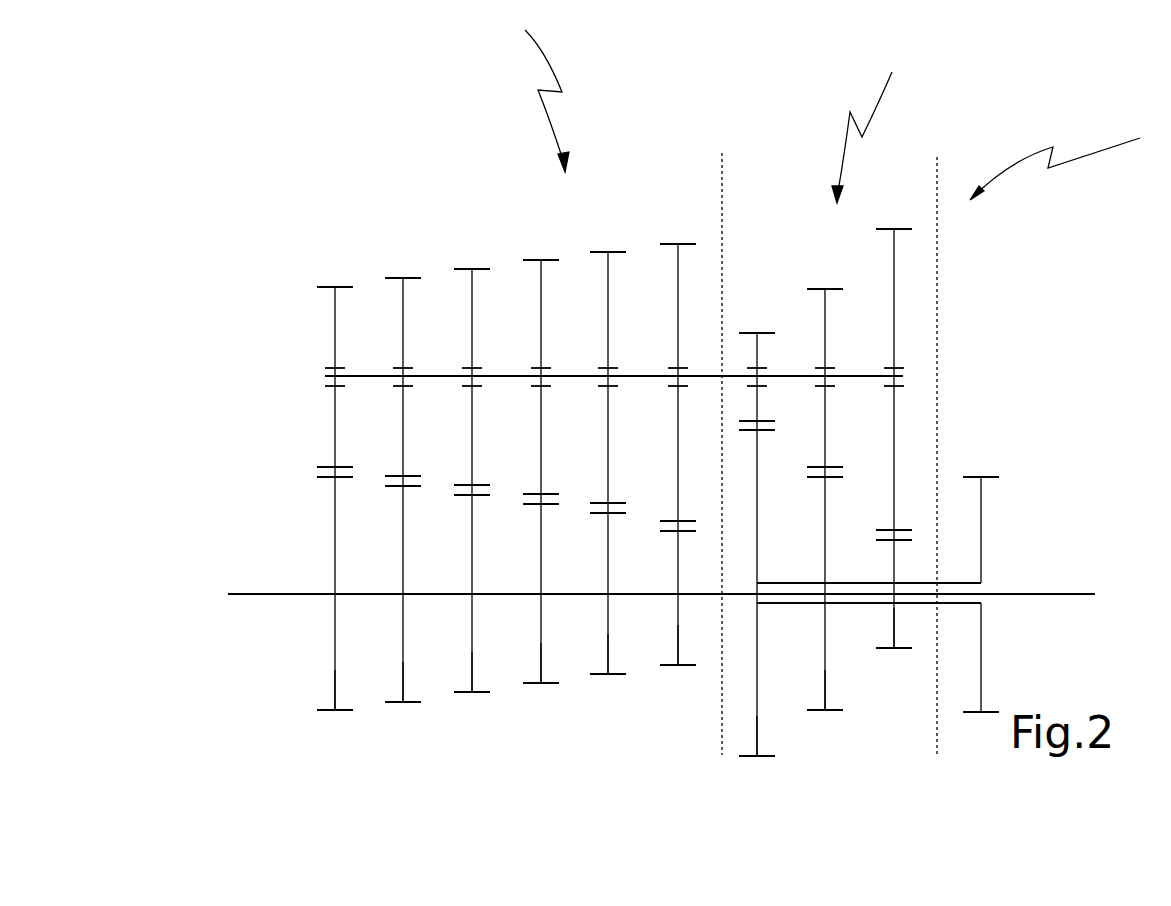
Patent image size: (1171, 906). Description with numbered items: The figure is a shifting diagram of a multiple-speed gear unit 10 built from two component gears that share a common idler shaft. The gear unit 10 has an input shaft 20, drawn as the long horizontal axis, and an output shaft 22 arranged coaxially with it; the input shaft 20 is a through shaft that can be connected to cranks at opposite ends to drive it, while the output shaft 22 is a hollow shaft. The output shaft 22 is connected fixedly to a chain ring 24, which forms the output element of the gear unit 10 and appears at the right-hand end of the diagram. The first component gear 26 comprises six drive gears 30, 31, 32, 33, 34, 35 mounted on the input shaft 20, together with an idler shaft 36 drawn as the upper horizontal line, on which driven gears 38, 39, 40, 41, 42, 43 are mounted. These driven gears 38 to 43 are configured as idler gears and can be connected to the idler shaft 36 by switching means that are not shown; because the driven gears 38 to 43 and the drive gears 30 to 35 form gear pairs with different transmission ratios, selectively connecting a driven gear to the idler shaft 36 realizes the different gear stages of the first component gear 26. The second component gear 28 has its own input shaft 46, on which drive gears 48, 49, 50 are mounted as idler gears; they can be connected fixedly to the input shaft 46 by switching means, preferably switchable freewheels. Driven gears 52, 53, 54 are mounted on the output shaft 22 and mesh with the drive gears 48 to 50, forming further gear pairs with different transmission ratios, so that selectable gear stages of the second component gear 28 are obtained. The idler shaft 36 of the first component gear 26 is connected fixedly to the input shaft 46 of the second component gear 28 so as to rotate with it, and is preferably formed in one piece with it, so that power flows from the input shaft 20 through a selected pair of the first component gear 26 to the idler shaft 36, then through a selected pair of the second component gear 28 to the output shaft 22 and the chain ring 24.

The gear unit 10 is at (1067, 162).
The input shaft 20 is at (276, 594).
The output shaft 22 is at (865, 603).
The chain ring 24 is at (981, 512).
The first component gear 26 is at (534, 95).
The second component gear 28 is at (874, 127).
The drive gear 30 is at (326, 712).
The drive gear 31 is at (395, 703).
The drive gear 32 is at (465, 694).
The drive gear 33 is at (533, 685).
The drive gear 34 is at (600, 676).
The drive gear 35 is at (667, 666).
The idler shaft 36 is at (368, 376).
The driven gear 38 is at (326, 287).
The driven gear 39 is at (394, 278).
The driven gear 40 is at (463, 268).
The driven gear 41 is at (547, 260).
The driven gear 42 is at (613, 252).
The driven gear 43 is at (673, 244).
The input shaft 46 is at (792, 376).
The drive gear 48 is at (752, 333).
The drive gear 49 is at (833, 288).
The drive gear 50 is at (905, 228).
The driven gear 52 is at (762, 758).
The driven gear 53 is at (815, 712).
The driven gear 54 is at (898, 649).